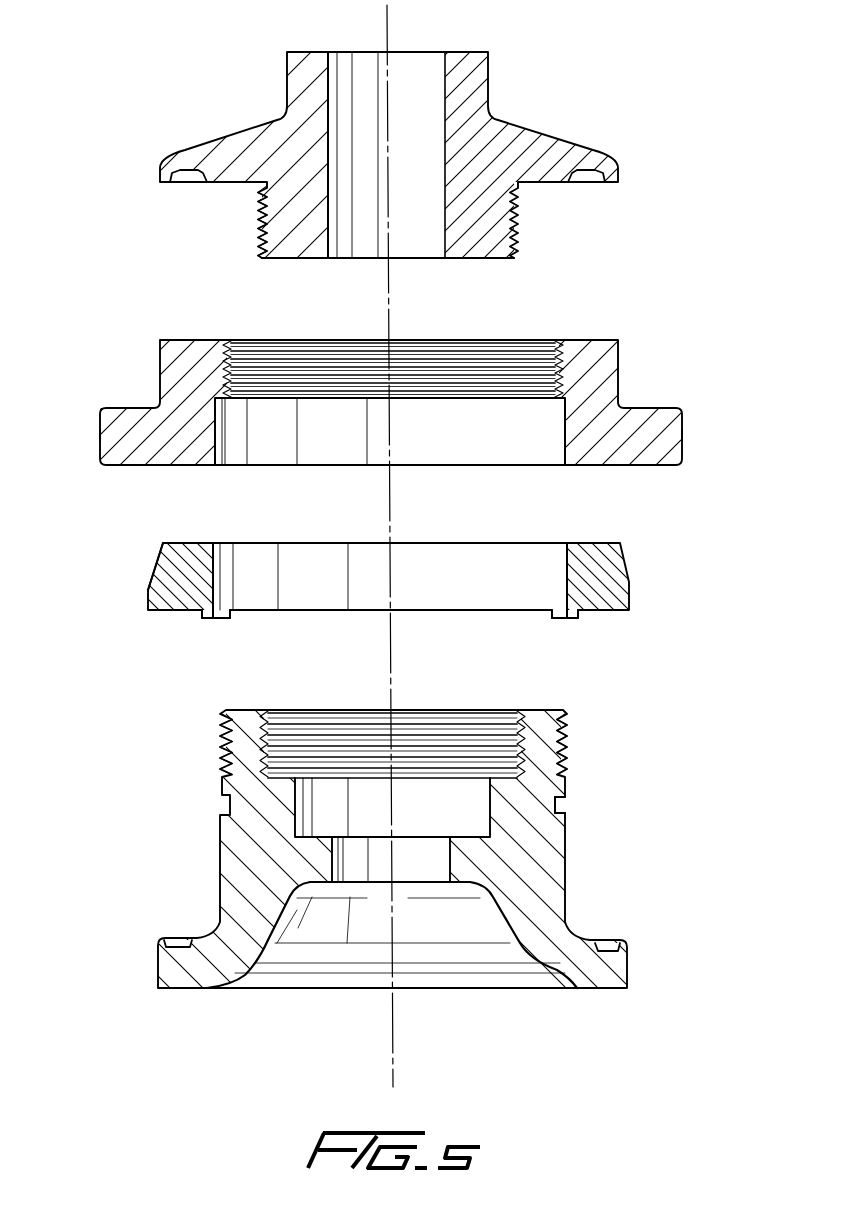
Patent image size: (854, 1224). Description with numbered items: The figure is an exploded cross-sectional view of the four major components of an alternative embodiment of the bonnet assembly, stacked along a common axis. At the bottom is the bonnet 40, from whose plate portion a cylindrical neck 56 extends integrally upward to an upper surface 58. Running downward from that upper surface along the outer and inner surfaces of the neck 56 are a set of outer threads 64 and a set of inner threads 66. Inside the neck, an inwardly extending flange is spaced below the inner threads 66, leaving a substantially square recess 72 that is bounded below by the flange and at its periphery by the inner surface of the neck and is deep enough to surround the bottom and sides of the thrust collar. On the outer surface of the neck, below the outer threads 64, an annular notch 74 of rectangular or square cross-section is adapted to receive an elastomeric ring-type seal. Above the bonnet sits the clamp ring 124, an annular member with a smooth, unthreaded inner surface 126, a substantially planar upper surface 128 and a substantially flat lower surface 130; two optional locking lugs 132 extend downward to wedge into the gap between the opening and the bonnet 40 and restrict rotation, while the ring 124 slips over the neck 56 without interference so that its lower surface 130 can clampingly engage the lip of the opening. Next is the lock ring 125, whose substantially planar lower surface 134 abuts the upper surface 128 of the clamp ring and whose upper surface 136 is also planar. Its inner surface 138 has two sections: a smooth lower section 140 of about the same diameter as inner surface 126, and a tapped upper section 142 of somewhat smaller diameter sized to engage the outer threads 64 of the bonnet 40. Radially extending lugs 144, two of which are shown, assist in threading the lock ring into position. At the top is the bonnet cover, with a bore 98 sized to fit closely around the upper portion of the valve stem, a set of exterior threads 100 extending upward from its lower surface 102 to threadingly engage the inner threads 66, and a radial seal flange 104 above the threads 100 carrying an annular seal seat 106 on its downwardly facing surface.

The bonnet 40 is at (567, 892).
The cylindrical neck 56 is at (573, 777).
The upper surface 58 is at (252, 710).
The set of outer threads 64 is at (225, 750).
The set of inner threads 66 is at (518, 735).
The recess 72 is at (445, 820).
The annular notch 74 is at (560, 808).
The bore 98 is at (362, 60).
The set of exterior threads 100 is at (258, 212).
The lower surface 102 is at (297, 258).
The radial seal flange 104 is at (215, 140).
The annular seal seat 106 is at (185, 181).
The clamp ring 124 is at (150, 562).
The lock ring 125 is at (100, 415).
The inner surface 126 is at (567, 575).
The upper surface 128 is at (190, 542).
The lower surface 130 is at (170, 612).
The locking lugs 132 is at (207, 620).
The lower surface 134 is at (575, 463).
The upper surface 136 is at (190, 340).
The inner surface 138 is at (553, 397).
The lower section 140 is at (223, 438).
The upper section 142 is at (222, 352).
The radially extending lugs 144 is at (667, 440).